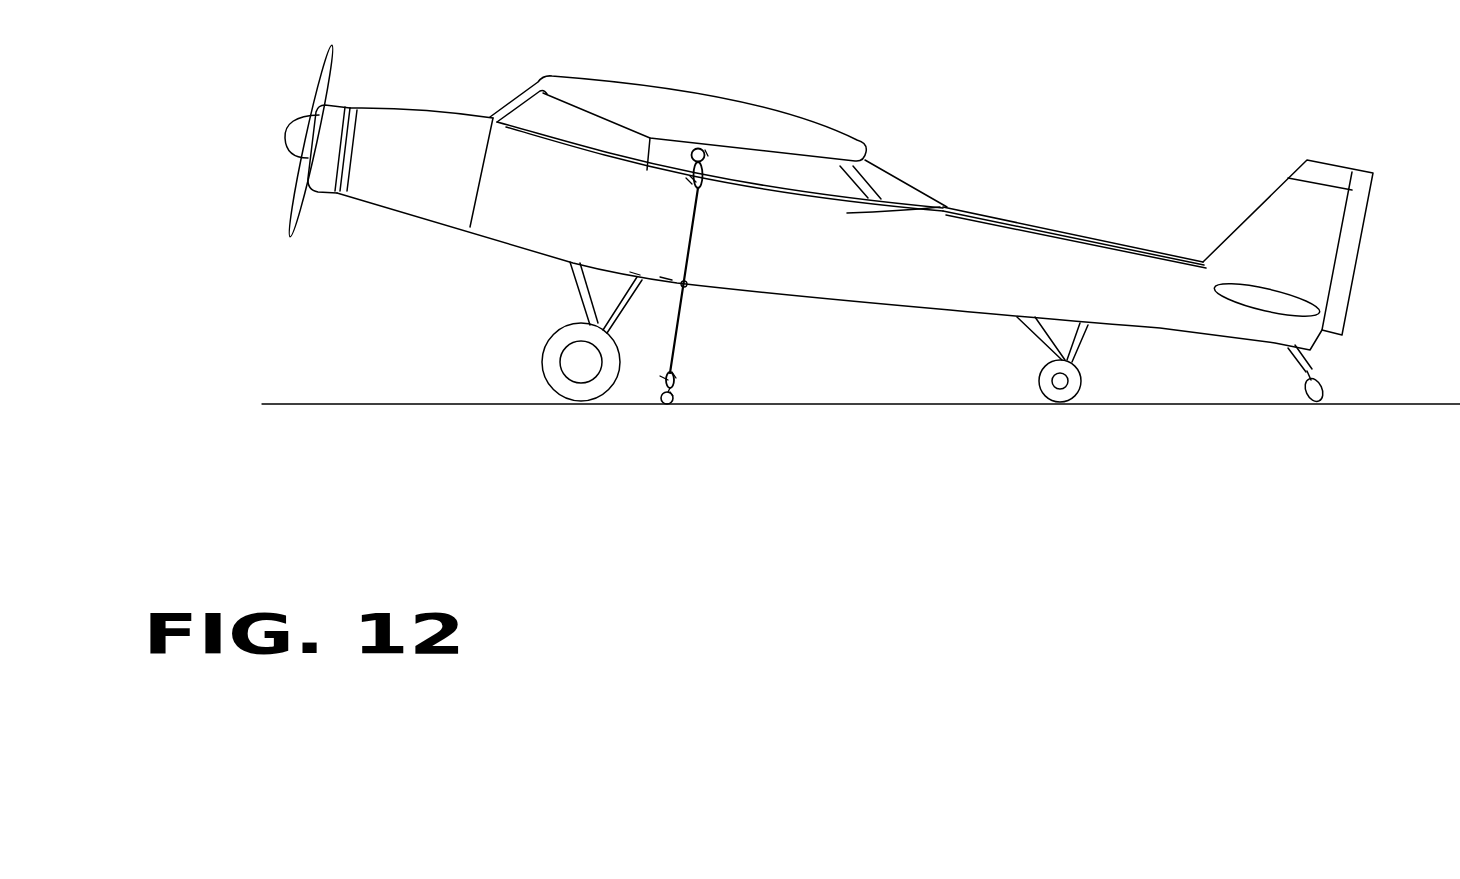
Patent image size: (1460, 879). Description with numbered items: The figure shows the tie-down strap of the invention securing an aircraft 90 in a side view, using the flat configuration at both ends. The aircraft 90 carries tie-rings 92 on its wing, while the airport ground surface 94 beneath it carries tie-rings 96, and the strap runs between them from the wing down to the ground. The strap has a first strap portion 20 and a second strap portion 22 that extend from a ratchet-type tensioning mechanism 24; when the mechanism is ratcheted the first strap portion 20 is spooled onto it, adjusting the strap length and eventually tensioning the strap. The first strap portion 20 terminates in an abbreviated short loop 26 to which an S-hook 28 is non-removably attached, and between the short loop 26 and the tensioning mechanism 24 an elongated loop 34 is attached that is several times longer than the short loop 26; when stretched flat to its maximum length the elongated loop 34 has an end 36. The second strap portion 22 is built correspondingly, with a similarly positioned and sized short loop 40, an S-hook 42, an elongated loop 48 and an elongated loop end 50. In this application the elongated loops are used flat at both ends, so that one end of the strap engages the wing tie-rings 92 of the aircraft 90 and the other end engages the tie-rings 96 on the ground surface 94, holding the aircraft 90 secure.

The aircraft 90 is at (413, 214).
The first strap portion 20 is at (683, 328).
The second strap portion 22 is at (667, 278).
The ratchet-type tensioning mechanism 24 is at (635, 273).
The short loop 26 is at (665, 378).
The S-hook 28 is at (663, 386).
The elongated loop 34 is at (676, 378).
The elongated loop end 36 is at (664, 390).
The short loop 40 is at (690, 182).
The S-hook 42 is at (694, 180).
The elongated loop 48 is at (705, 152).
The elongated loop end 50 is at (672, 176).
The tie-rings 92 is at (705, 155).
The airport ground surface 94 is at (675, 400).
The tie-rings 96 is at (662, 405).